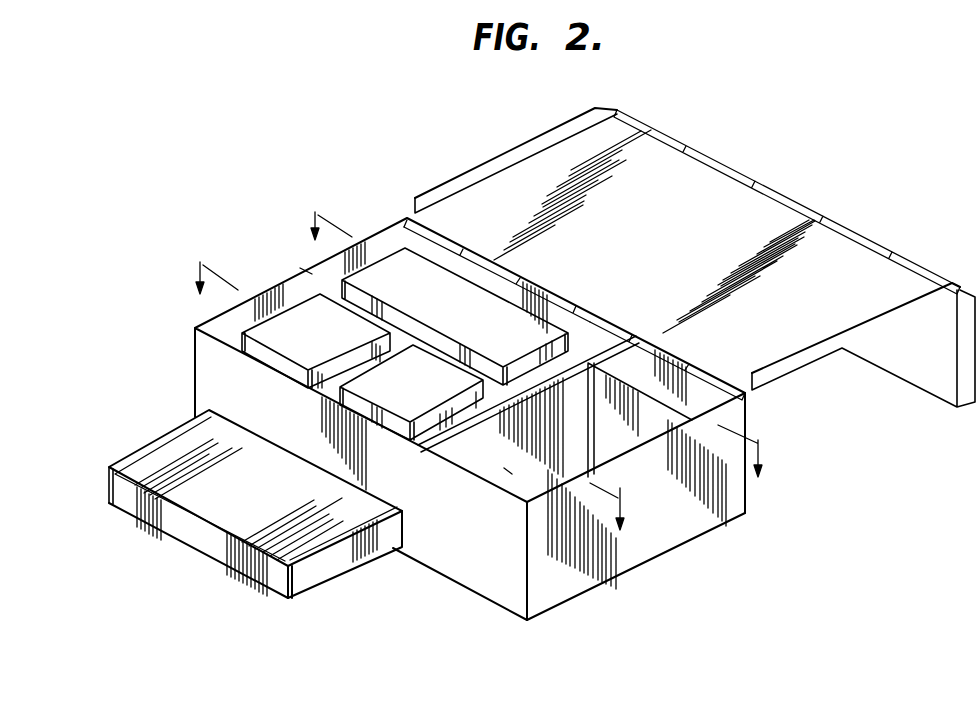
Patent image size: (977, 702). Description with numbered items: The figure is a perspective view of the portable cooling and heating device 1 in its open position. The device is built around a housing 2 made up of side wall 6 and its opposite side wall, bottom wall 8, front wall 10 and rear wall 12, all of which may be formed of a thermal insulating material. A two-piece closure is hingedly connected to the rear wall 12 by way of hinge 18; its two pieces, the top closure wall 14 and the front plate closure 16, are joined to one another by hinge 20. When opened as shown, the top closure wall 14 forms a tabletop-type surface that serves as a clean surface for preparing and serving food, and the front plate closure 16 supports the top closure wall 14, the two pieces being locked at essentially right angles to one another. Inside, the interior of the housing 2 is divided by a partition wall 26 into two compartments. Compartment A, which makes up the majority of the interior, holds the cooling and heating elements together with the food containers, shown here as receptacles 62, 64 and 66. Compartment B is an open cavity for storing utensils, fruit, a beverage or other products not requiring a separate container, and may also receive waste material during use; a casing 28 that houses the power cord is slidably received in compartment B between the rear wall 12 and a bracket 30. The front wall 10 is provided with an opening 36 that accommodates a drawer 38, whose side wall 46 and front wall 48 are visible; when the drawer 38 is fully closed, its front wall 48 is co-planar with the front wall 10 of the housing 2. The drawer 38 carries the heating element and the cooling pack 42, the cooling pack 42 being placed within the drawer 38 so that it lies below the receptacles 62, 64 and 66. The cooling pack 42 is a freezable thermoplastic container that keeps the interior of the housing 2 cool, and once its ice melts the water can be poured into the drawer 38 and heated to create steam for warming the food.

The portable cooling and heating device 1 is at (348, 168).
The housing 2 is at (660, 584).
The side wall 6 is at (258, 283).
The bottom wall 8 is at (444, 587).
The front wall 10 is at (482, 553).
The rear wall 12 is at (755, 406).
The top closure wall 14 is at (676, 249).
The front plate closure 16 is at (937, 368).
The hinge 18 is at (407, 217).
The hinge 20 is at (618, 108).
The partition wall 26 is at (494, 456).
The casing 28 is at (673, 358).
The bracket 30 is at (586, 396).
The opening 36 is at (217, 412).
The drawer 38 is at (107, 486).
The cooling pack 42 is at (267, 501).
The side wall 46 is at (350, 570).
The front wall 48 is at (190, 538).
The receptacle 62 is at (472, 318).
The receptacle 64 is at (332, 343).
The receptacle 66 is at (430, 392).
The compartment A is at (306, 274).
The compartment B is at (506, 471).